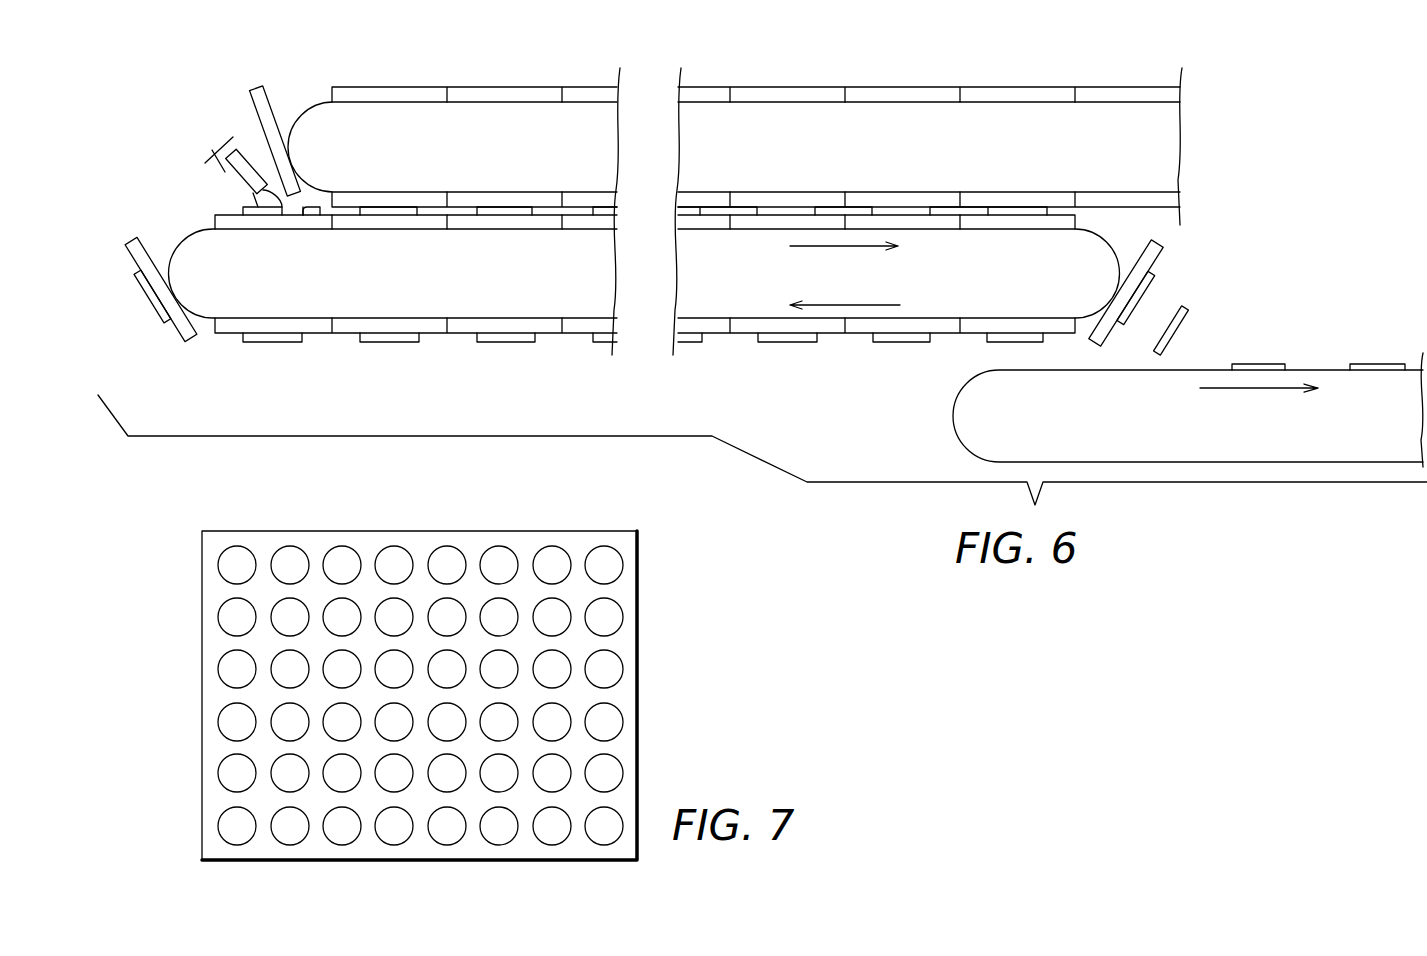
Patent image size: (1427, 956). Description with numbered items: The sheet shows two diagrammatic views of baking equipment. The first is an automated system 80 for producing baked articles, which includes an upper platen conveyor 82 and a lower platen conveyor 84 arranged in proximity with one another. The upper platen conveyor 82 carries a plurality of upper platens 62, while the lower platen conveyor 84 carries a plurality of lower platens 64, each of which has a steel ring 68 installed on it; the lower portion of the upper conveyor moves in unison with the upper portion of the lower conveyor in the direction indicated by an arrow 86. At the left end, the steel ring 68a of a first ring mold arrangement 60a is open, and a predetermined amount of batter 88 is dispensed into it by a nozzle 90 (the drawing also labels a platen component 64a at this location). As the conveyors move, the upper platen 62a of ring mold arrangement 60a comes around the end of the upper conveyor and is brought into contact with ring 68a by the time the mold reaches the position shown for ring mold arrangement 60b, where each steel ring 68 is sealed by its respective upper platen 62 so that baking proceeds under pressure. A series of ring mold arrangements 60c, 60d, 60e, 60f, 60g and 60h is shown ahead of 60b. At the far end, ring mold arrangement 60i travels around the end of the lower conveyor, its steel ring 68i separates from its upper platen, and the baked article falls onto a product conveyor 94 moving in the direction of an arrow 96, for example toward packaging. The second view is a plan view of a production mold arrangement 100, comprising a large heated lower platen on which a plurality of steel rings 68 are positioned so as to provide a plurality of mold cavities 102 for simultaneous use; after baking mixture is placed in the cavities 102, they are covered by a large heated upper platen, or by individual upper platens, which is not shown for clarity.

In FIG. 6, the first ring mold arrangement 60a is at (200, 224).
In FIG. 6, the ring mold arrangement 60b is at (360, 192).
In FIG. 6, the ring mold arrangement 60c is at (454, 192).
In FIG. 6, the ring mold arrangement 60d is at (600, 192).
In FIG. 6, the ring mold arrangement 60e is at (680, 192).
In FIG. 6, the ring mold arrangement 60f is at (760, 192).
In FIG. 6, the ring mold arrangement 60g is at (906, 192).
In FIG. 6, the ring mold arrangement 60h is at (1008, 192).
In FIG. 6, the ring mold arrangement 60i is at (1116, 192).
In FIG. 6, the upper platen 62 is at (905, 87).
In FIG. 6, the upper platen 62a is at (273, 100).
In FIG. 6, the lower platen 64 is at (523, 229).
In FIG. 6, the pallet piece 64a is at (277, 207).
In FIG. 6, the steel ring 68 is at (490, 216).
In FIG. 7, the steel ring 68 is at (497, 560).
In FIG. 6, the steel ring 68a is at (323, 207).
In FIG. 6, the steel ring 68i is at (1150, 288).
In FIG. 6, the automated system 80 is at (1262, 70).
In FIG. 6, the upper platen conveyor 82 is at (509, 78).
In FIG. 6, the lower platen conveyor 84 is at (752, 351).
In FIG. 6, the arrow 86 is at (830, 246).
In FIG. 6, the batter 88 is at (270, 200).
In FIG. 6, the nozzle 90 is at (233, 163).
In FIG. 6, the product conveyor 94 is at (955, 412).
In FIG. 6, the arrow 96 is at (1255, 388).
In FIG. 7, the production mold arrangement 100 is at (665, 624).
In FIG. 7, the mold cavity 102 is at (637, 698).